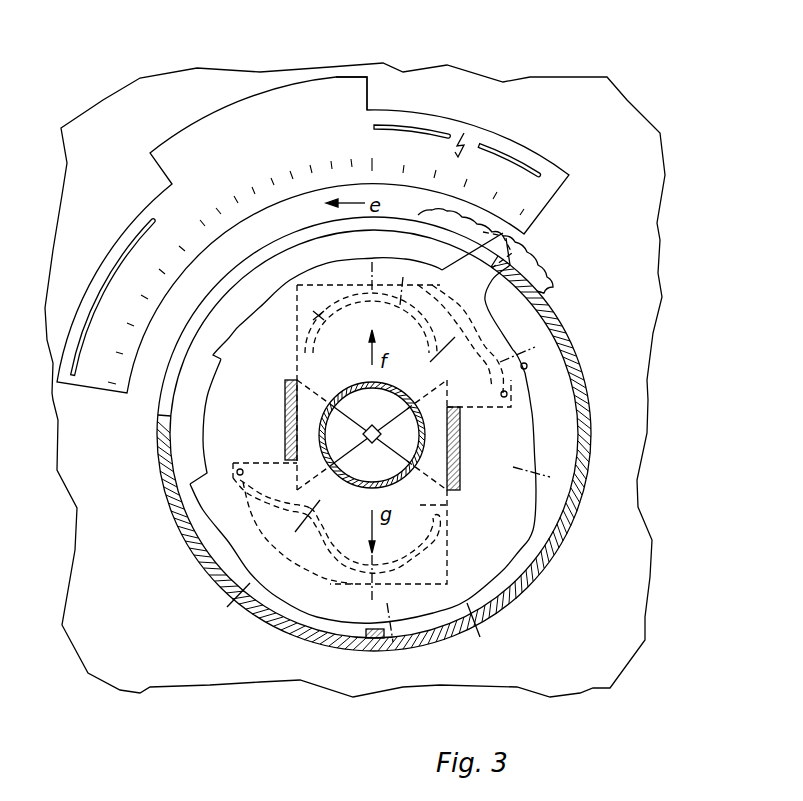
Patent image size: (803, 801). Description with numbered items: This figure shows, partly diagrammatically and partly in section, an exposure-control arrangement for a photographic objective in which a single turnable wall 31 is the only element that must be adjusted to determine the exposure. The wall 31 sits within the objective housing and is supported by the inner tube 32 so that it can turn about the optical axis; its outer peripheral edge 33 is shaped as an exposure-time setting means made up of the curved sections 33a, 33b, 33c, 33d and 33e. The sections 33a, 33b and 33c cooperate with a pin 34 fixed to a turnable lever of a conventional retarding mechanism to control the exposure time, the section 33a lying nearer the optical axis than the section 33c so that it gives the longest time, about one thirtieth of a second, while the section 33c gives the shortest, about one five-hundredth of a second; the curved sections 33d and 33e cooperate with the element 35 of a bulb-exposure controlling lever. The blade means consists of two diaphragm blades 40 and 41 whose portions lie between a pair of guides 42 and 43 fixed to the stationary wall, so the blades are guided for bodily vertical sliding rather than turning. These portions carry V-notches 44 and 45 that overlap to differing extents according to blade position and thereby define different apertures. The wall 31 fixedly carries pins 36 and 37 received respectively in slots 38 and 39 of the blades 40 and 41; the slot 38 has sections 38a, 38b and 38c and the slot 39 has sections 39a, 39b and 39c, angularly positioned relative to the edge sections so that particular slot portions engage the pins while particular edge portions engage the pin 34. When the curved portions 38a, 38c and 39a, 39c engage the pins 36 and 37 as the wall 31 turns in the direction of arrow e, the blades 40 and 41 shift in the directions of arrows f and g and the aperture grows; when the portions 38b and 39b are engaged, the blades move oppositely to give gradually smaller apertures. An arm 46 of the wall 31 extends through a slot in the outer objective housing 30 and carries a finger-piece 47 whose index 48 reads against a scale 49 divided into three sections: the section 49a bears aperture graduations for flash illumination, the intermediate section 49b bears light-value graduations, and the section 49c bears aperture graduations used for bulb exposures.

The outer objective housing 30 is at (580, 383).
The turnable wall 31 is at (327, 270).
The inner tube 32 is at (372, 385).
The outer peripheral edge (exposure-time setting means) 33 is at (515, 572).
The curved edge section 33a is at (533, 416).
The curved edge section 33b is at (533, 527).
The curved edge section 33c is at (485, 634).
The curved edge section 33d is at (212, 382).
The curved edge section 33e is at (228, 609).
The pin 34 is at (527, 367).
The element of bulb-exposure controlling lever 35 is at (372, 640).
The pin 36 is at (508, 394).
The pin 37 is at (240, 468).
The slot 38 is at (432, 308).
The curved slot portion 38a is at (494, 333).
The slot portion 38b is at (403, 277).
The curved slot portion 38c is at (320, 315).
The slot 39 is at (304, 548).
The curved slot portion 39a is at (253, 498).
The slot portion 39b is at (337, 560).
The curved slot portion 39c is at (427, 545).
The diaphragm blade 40 is at (337, 358).
The diaphragm blade 41 is at (447, 505).
The guide 42 is at (460, 437).
The guide 43 is at (286, 410).
The V-notch 44 is at (419, 435).
The V-notch 45 is at (323, 435).
The arm 46 is at (500, 261).
The finger-piece 47 is at (550, 286).
The index 48 is at (505, 235).
The scale 49 is at (185, 127).
The scale section 49a is at (458, 130).
The intermediate scale section 49b is at (345, 98).
The scale section 49c is at (130, 242).